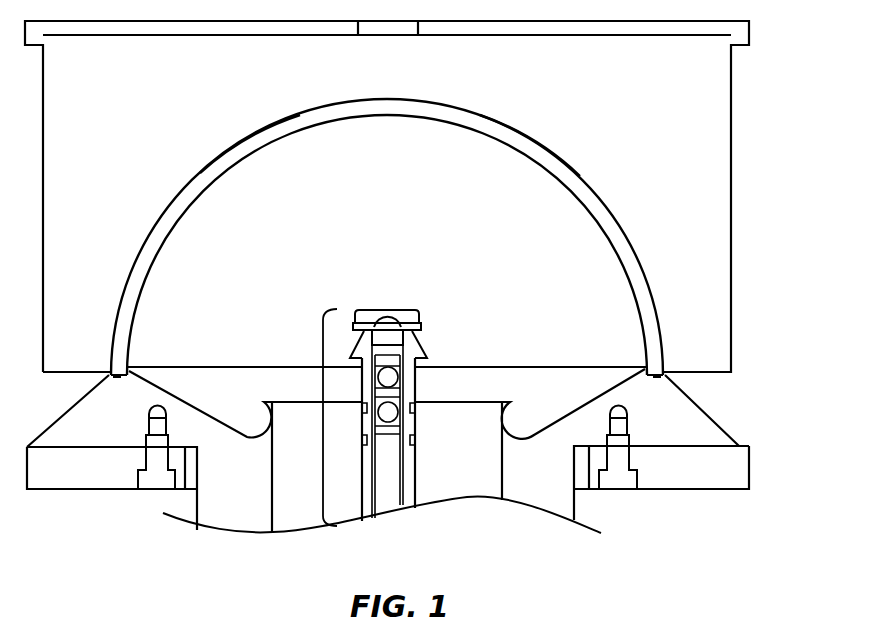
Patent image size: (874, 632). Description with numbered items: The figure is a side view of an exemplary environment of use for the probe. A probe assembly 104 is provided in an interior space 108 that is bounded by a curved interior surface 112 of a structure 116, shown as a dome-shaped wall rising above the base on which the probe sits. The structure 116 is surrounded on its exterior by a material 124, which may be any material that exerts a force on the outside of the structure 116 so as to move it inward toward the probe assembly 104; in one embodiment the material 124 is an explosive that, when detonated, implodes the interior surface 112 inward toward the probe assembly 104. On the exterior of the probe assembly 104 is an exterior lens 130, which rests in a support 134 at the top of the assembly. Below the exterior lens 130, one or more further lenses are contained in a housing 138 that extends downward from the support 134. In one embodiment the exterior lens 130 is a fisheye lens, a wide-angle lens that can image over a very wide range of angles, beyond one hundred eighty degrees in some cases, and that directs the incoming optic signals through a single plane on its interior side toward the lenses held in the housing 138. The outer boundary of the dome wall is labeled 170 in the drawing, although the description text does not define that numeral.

The probe assembly 104 is at (323, 418).
The interior space 108 is at (582, 256).
The curved interior surface 112 is at (576, 194).
The structure 116 is at (513, 138).
The material 124 is at (697, 121).
The exterior lens 130 is at (369, 312).
The support 134 is at (422, 327).
The housing 138 is at (418, 352).
The outer surface of dome 170 is at (434, 103).